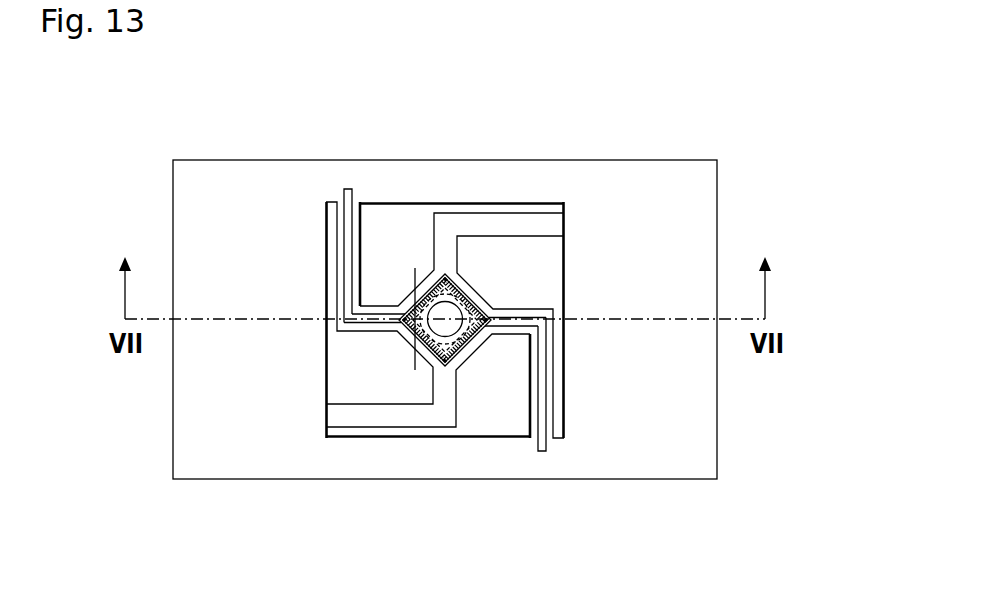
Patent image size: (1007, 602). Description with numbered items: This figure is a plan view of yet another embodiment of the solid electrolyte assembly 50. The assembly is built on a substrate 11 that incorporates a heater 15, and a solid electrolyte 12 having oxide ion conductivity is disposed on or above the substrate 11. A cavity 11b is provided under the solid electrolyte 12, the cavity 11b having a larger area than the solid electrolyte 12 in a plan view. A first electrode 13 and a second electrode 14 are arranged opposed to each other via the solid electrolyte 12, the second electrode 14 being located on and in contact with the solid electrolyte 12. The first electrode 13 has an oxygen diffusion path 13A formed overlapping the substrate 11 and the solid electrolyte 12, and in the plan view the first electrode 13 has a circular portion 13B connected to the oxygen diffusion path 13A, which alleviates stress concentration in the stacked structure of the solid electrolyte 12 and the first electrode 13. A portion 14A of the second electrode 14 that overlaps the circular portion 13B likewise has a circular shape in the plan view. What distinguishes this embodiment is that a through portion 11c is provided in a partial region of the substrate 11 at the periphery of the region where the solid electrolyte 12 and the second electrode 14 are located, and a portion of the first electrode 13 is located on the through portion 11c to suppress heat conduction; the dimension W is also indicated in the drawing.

The solid electrolyte assembly 50 is at (788, 112).
The substrate 11 is at (702, 200).
The cavity 11b is at (355, 388).
The through portion 11c is at (330, 253).
The solid electrolyte 12 is at (450, 314).
The first electrode 13 is at (350, 258).
The oxygen diffusion path 13A is at (402, 310).
The circular portion 13B is at (440, 292).
The second electrode 14 is at (543, 409).
The portion of the second electrode 14A is at (480, 296).
The heater 15 is at (458, 357).
The width W is at (417, 338).